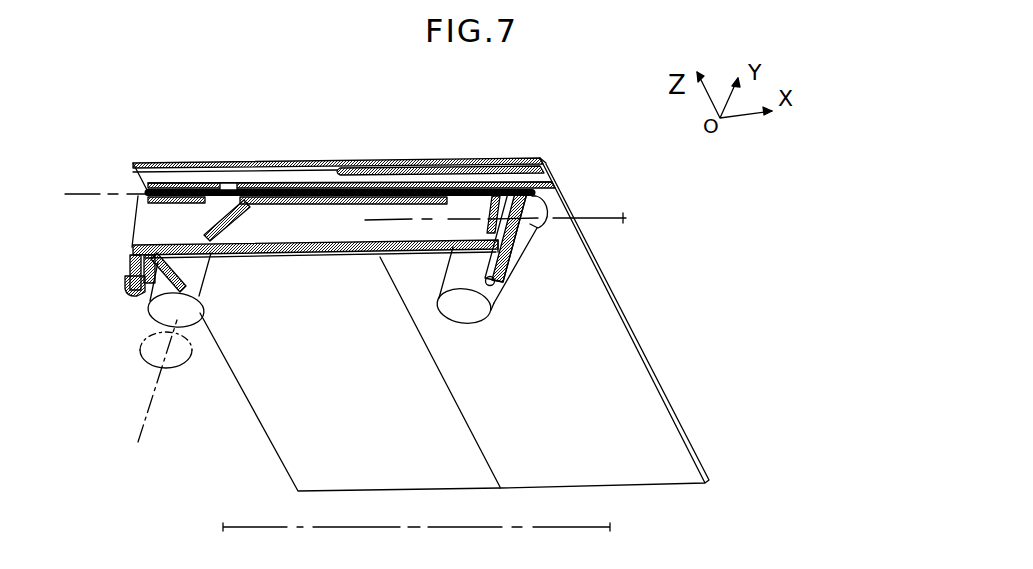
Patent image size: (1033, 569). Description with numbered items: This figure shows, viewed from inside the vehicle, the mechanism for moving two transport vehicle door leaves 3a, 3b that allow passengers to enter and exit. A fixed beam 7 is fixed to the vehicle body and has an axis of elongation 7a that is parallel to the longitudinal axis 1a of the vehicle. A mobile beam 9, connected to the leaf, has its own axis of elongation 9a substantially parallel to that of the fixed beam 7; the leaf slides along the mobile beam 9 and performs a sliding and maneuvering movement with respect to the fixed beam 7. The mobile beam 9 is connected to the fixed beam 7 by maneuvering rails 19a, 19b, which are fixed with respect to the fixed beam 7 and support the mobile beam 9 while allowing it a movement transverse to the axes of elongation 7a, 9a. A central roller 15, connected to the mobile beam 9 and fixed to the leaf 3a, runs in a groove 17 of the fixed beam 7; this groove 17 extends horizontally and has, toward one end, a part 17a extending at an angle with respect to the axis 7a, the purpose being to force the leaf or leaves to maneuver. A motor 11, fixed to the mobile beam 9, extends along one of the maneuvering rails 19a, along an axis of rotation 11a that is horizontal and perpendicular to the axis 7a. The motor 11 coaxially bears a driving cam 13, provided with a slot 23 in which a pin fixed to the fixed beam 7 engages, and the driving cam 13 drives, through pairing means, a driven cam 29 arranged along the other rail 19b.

The longitudinal axis 1a is at (240, 525).
The door leaf 3a is at (267, 382).
The door leaf 3b is at (624, 368).
The fixed beam 7 is at (150, 224).
The axis of elongation 7a is at (609, 216).
The mobile beam 9 is at (288, 192).
The axis of elongation 9a is at (95, 196).
The motor 11 is at (151, 334).
The axis of rotation 11a is at (140, 440).
The driving cam 13 is at (210, 278).
The central roller 15 is at (205, 230).
The groove 17 is at (418, 196).
The angled part of the groove 17a is at (243, 212).
The maneuvering rail 19a is at (131, 268).
The maneuvering rail 19b is at (512, 270).
The slot 23 is at (207, 270).
The driven cam 29 is at (484, 313).